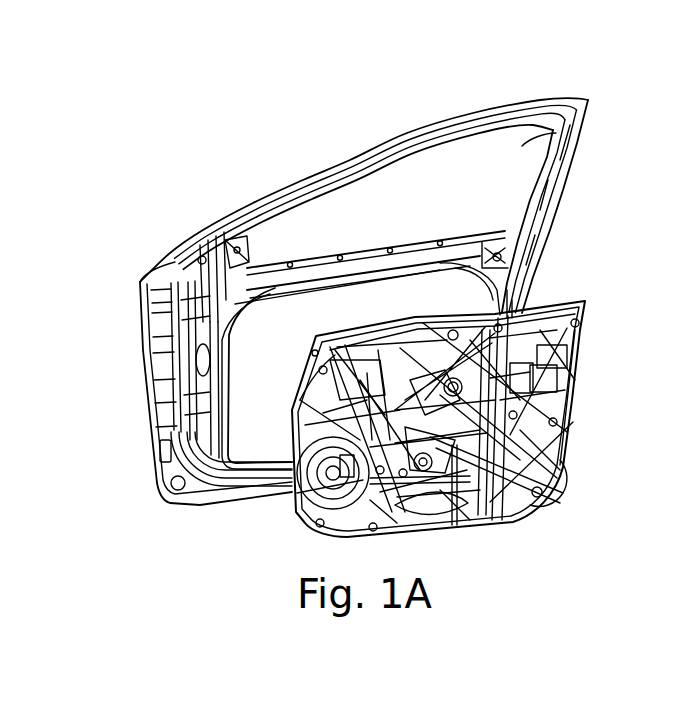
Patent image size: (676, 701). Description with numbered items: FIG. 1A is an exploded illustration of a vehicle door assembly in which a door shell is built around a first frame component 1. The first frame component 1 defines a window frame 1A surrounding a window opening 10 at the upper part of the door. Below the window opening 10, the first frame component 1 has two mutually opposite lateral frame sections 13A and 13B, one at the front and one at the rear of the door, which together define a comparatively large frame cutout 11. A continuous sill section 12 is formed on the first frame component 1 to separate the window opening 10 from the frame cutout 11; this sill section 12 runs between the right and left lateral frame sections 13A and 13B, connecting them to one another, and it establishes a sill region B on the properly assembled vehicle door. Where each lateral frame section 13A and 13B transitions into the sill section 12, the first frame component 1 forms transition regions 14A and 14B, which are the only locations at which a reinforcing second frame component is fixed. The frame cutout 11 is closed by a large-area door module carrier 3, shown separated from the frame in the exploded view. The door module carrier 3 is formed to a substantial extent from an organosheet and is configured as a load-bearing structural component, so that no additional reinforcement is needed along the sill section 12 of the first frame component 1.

The first frame component 1 is at (358, 299).
The window frame 1A is at (401, 208).
The window opening 10 is at (575, 148).
The sill region B is at (550, 217).
The transition region 14A is at (232, 223).
The transition region 14B is at (500, 243).
The continuous sill section 12 is at (420, 240).
The frame cutout 11 is at (530, 272).
The lateral frame section 13A is at (153, 330).
The lateral frame section 13B is at (522, 295).
The door module carrier 3 is at (540, 532).